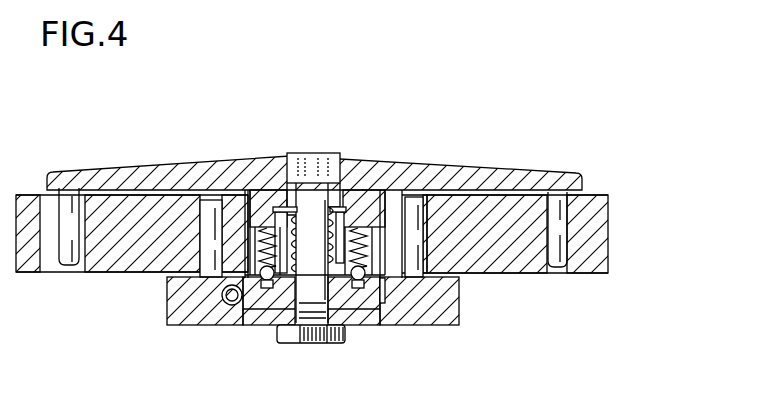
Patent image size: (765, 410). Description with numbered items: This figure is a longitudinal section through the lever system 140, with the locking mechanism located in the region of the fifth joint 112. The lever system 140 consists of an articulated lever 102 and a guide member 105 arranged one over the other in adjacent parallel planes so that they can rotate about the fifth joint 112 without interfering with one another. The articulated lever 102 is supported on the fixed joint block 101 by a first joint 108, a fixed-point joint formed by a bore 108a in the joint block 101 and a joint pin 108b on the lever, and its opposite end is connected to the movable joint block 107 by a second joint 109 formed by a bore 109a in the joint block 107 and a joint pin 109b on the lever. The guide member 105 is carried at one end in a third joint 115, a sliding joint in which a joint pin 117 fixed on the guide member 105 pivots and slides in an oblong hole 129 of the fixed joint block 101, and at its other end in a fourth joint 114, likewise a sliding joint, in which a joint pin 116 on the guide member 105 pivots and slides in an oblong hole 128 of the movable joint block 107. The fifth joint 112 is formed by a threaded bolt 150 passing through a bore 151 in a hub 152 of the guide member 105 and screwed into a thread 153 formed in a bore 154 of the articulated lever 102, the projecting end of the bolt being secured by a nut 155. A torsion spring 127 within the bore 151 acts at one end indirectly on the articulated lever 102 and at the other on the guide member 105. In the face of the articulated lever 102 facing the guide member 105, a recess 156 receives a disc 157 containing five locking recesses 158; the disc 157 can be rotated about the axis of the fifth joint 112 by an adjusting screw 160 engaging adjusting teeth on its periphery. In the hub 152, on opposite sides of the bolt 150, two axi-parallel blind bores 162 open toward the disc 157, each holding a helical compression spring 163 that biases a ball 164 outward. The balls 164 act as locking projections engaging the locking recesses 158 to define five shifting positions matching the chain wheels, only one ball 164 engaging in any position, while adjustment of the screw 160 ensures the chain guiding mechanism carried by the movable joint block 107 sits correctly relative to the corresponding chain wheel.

The fixed joint block 101 is at (118, 258).
The articulated lever 102 is at (452, 322).
The guide member 105 is at (128, 170).
The movable joint block 107 is at (515, 270).
The first joint 108 is at (192, 210).
The bore 108a is at (200, 253).
The joint pin 108b is at (213, 205).
The second joint 109 is at (432, 203).
The bore 109a is at (425, 262).
The joint pin 109b is at (412, 203).
The fifth joint 112 is at (327, 128).
The fourth joint 114 is at (586, 192).
The third joint 115 is at (43, 192).
The joint pin 116 is at (557, 262).
The joint pin 117 is at (67, 254).
The torsion spring 127 is at (282, 206).
The oblong hole 128 is at (577, 234).
The oblong hole 129 is at (46, 263).
The lever system 140 is at (548, 116).
The threaded bolt 150 is at (310, 197).
The bore 151 is at (342, 205).
The hub 152 is at (314, 228).
The thread 153 is at (314, 255).
The bore 154 is at (337, 312).
The nut 155 is at (340, 344).
The recess 156 is at (381, 300).
The disc 157 is at (283, 323).
The locking recesses 158 is at (272, 290).
The adjusting screw 160 is at (232, 304).
The blind bores 162 is at (264, 228).
The helical compression spring 163 is at (283, 288).
The ball 164 is at (266, 282).